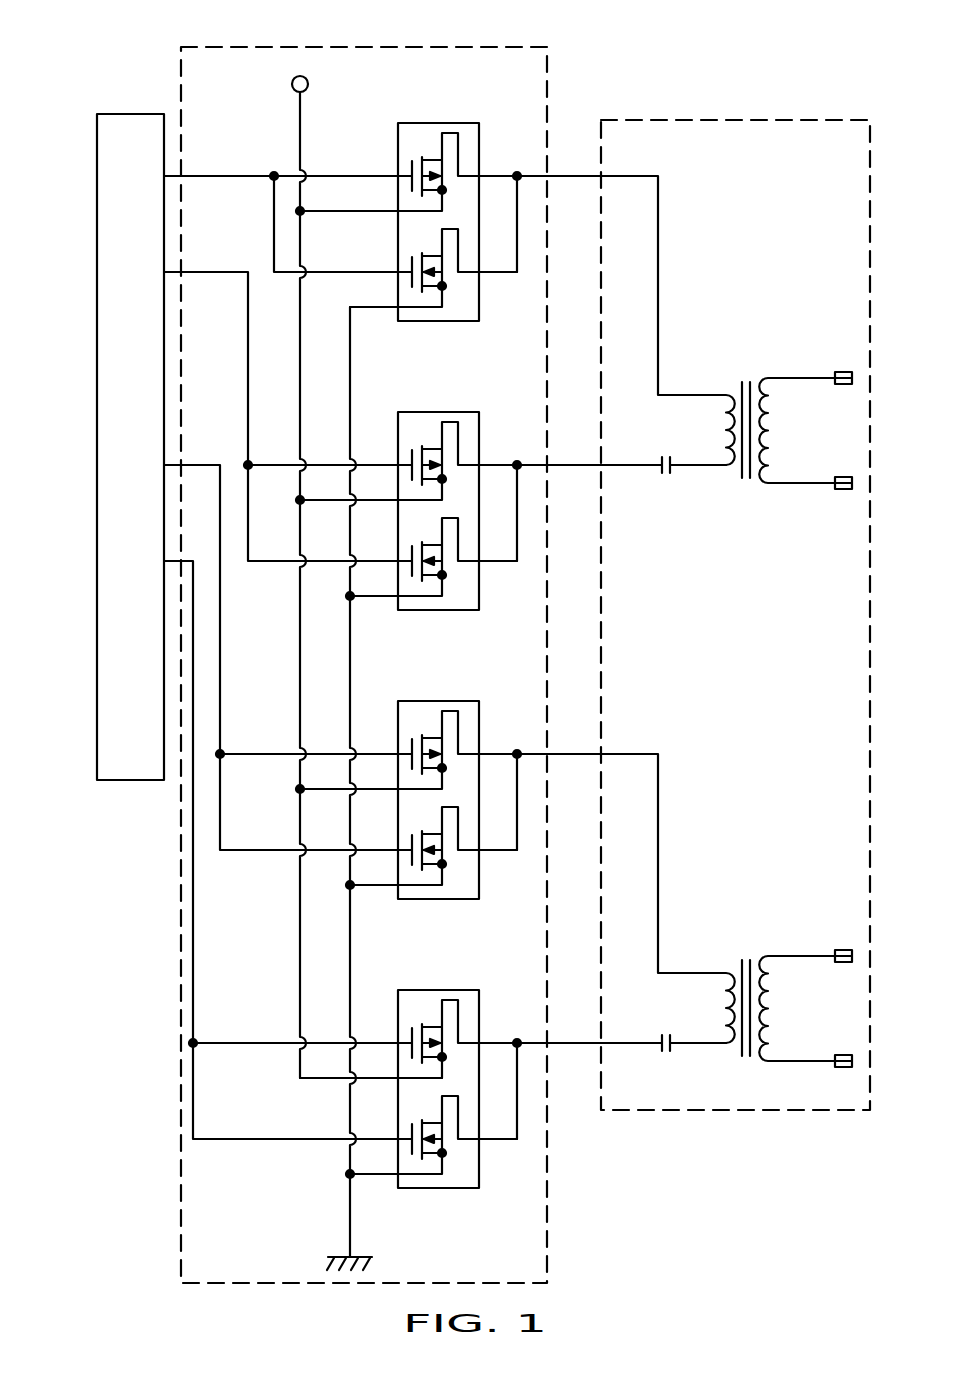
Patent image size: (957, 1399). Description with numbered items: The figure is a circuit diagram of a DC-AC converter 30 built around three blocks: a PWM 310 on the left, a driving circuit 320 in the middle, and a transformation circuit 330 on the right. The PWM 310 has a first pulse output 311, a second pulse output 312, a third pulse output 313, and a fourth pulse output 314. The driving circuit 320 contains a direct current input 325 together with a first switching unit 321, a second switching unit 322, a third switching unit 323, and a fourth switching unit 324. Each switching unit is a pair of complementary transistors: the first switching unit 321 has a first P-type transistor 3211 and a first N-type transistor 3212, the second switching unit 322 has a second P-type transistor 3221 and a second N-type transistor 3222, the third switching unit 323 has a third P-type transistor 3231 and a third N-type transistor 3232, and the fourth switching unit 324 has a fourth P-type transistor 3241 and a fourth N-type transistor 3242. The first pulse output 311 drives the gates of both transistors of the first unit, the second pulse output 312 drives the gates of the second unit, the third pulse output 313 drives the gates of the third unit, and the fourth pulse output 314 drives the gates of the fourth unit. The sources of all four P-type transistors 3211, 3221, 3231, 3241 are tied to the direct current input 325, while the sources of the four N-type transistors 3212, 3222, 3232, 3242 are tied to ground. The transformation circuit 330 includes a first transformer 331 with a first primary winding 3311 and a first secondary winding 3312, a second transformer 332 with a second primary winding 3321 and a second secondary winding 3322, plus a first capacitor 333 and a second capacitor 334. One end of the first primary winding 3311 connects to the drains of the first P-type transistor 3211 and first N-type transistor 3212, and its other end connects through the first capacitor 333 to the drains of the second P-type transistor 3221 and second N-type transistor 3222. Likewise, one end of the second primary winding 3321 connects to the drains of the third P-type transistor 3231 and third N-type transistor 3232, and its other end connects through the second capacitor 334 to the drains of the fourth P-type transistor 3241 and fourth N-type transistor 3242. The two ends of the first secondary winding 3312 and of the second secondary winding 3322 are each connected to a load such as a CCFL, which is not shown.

The DC-AC converter 30 is at (682, 37).
The PWM 310 is at (130, 114).
The first pulse output 311 is at (164, 176).
The second pulse output 312 is at (164, 272).
The third pulse output 313 is at (164, 465).
The fourth pulse output 314 is at (164, 561).
The driving circuit 320 is at (547, 75).
The first switching unit 321 is at (417, 231).
The first P-type transistor 3211 is at (418, 153).
The first N-type transistor 3212 is at (450, 297).
The second switching unit 322 is at (416, 492).
The second P-type transistor 3221 is at (465, 440).
The second N-type transistor 3222 is at (448, 587).
The third switching unit 323 is at (412, 782).
The third P-type transistor 3231 is at (465, 727).
The third N-type transistor 3232 is at (448, 876).
The fourth switching unit 324 is at (412, 1072).
The fourth P-type transistor 3241 is at (465, 1016).
The fourth N-type transistor 3242 is at (448, 1165).
The direct current input 325 is at (308, 82).
The transformation circuit 330 is at (720, 120).
The first transformer 331 is at (689, 332).
The first primary winding 3311 is at (726, 400).
The first secondary winding 3312 is at (767, 384).
The second transformer 332 is at (686, 910).
The second primary winding 3321 is at (726, 978).
The second secondary winding 3322 is at (767, 962).
The first capacitor 333 is at (666, 475).
The second capacitor 334 is at (666, 1053).